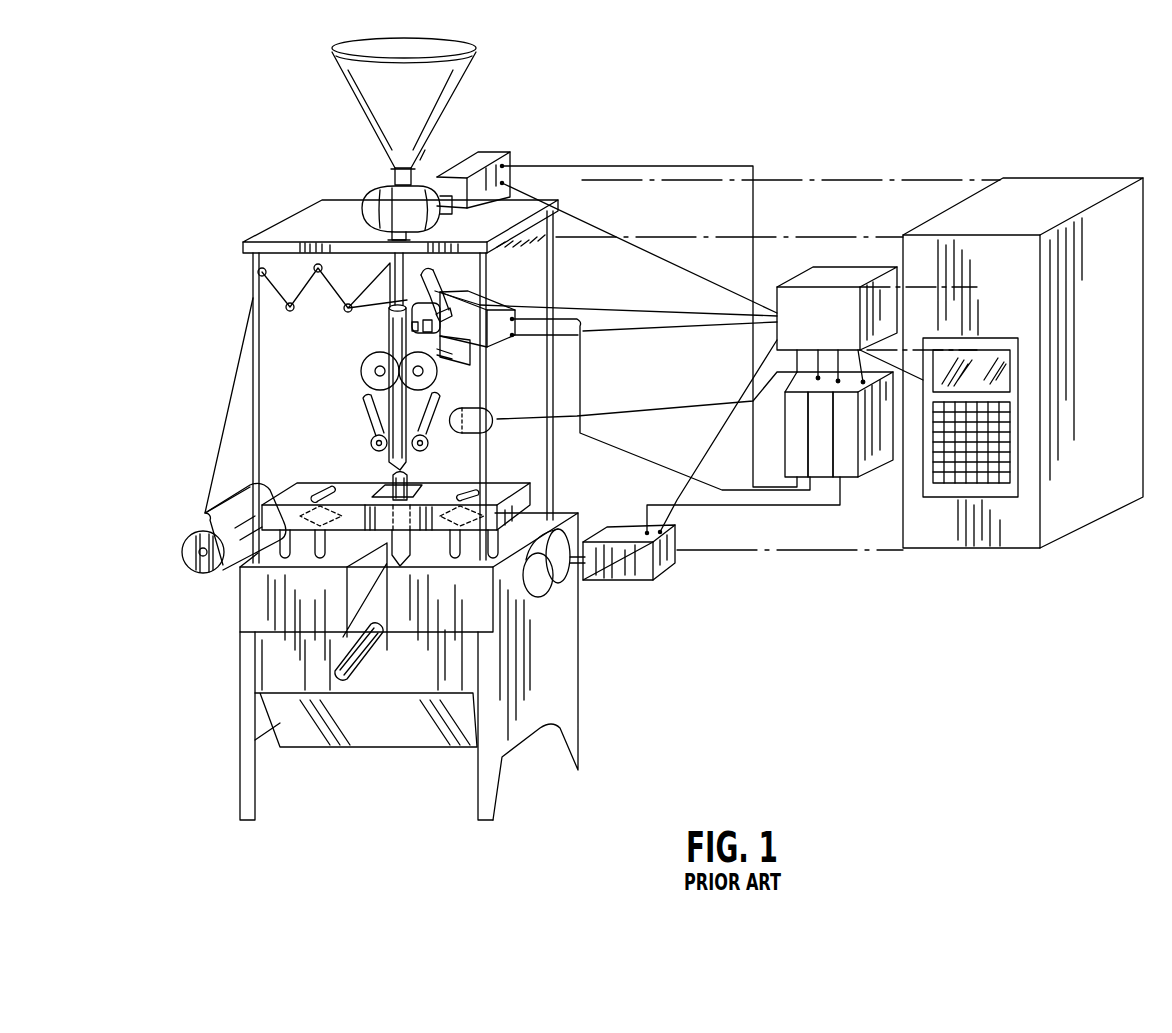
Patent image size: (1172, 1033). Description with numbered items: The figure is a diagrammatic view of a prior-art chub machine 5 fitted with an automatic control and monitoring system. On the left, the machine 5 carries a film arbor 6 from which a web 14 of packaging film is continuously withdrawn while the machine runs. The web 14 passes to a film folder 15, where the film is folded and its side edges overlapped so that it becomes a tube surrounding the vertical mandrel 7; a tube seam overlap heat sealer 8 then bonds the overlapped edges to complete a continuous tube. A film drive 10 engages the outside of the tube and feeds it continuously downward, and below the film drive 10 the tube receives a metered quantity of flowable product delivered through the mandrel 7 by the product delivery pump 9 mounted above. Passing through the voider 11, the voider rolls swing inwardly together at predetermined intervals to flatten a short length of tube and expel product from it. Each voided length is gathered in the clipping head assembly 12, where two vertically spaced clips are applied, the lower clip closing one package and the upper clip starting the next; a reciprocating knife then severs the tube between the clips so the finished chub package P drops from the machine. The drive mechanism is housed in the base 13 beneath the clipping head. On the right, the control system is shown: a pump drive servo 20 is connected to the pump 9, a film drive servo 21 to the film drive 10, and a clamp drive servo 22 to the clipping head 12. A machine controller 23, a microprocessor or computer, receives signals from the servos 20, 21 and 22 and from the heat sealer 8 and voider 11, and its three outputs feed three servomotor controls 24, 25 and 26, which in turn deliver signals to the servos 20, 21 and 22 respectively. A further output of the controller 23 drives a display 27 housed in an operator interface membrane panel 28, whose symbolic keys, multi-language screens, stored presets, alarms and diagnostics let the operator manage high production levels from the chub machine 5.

The chub machine 5 is at (185, 252).
The film arbor 6 is at (197, 570).
The mandrel 7 is at (400, 263).
The tube seam overlap heat sealer 8 is at (412, 327).
The product delivery pump 9 is at (363, 205).
The film drive 10 is at (362, 378).
The voider 11 is at (372, 443).
The clipping head assembly 12 is at (440, 492).
The base 13 is at (580, 628).
The web 14 is at (227, 403).
The film folder 15 is at (385, 280).
The pump drive servo 20 is at (466, 155).
The film drive servo 21 is at (490, 312).
The clamp drive servo 22 is at (628, 530).
The machine controller 23 is at (812, 278).
The servomotor control 24 is at (790, 452).
The servomotor control 25 is at (818, 458).
The servomotor control 26 is at (848, 463).
The display 27 is at (988, 358).
The operator interface membrane panel 28 is at (1012, 430).
The chub package P is at (360, 646).